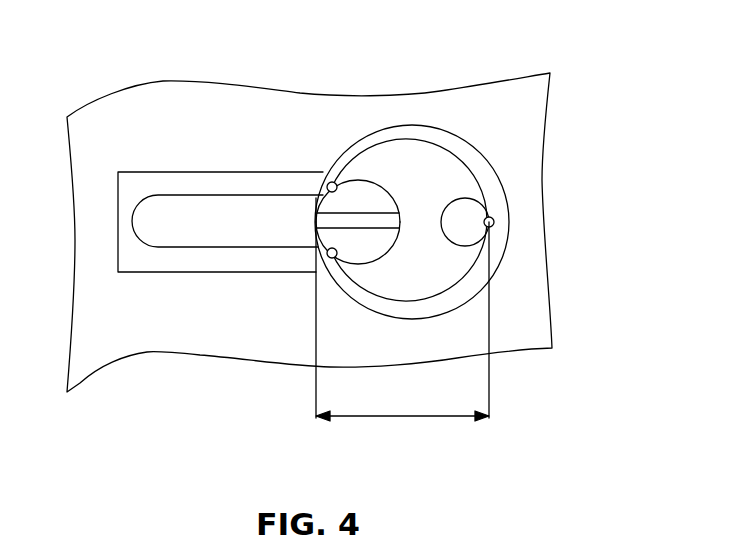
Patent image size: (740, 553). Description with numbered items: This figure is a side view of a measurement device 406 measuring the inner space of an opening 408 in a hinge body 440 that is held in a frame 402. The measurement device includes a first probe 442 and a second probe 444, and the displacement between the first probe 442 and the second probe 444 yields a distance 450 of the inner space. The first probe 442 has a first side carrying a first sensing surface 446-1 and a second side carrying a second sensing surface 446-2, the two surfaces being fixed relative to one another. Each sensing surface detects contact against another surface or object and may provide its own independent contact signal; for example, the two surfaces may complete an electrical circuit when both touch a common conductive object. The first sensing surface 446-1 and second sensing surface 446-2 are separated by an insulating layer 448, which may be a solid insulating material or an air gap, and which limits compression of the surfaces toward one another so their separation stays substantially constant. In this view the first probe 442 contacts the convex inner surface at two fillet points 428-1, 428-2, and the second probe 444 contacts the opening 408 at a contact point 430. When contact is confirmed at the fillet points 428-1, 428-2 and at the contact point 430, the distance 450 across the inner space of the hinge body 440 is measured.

The frame 402 is at (538, 90).
The substrate assembly 406 is at (500, 42).
The opening 408 is at (417, 167).
The fillet point 428-1 is at (329, 183).
The fillet point 428-2 is at (328, 257).
The contact point 430 is at (493, 226).
The hinge body 440 is at (178, 162).
The first probe 442 is at (289, 214).
The second probe 444 is at (468, 208).
The first sensing surface 446-1 is at (367, 197).
The second sensing surface 446-2 is at (373, 240).
The insulating layer 448 is at (332, 222).
The distance 450 is at (396, 421).